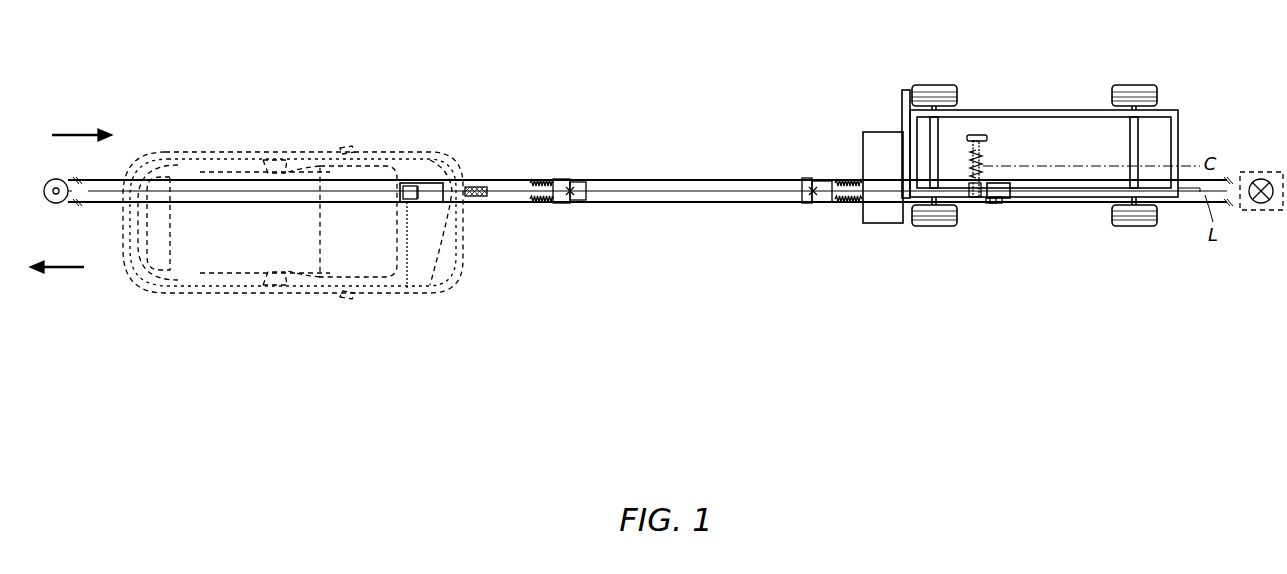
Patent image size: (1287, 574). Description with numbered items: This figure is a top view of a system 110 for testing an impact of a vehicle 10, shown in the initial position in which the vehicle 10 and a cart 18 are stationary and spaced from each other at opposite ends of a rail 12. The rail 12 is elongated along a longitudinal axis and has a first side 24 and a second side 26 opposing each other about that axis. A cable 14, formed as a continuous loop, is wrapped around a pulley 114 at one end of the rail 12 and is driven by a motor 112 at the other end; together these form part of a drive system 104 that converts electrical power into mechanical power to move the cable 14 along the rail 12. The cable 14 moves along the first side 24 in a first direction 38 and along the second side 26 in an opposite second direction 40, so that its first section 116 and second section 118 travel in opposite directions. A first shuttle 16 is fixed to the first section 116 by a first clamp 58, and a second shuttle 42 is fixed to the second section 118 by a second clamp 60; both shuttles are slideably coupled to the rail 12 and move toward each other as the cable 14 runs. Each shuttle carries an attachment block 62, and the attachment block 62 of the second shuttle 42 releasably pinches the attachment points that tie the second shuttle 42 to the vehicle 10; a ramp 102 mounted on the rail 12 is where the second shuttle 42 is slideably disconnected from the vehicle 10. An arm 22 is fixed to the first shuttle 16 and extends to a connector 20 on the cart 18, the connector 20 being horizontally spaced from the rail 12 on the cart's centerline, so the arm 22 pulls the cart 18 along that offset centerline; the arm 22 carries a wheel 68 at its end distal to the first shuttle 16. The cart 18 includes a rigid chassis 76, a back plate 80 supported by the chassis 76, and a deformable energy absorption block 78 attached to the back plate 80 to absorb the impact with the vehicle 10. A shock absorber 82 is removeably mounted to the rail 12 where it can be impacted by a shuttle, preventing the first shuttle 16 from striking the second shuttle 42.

The vehicle 10 is at (372, 296).
The rail 12 is at (702, 193).
The cable 14 is at (790, 177).
The first shuttle 16 is at (1012, 199).
The cart 18 is at (1063, 108).
The connector 20 is at (980, 163).
The arm 22 is at (983, 170).
The first side 24 is at (757, 195).
The second side 26 is at (758, 182).
The first direction 38 is at (71, 268).
The second direction 40 is at (70, 134).
The second shuttle 42 is at (430, 197).
The first clamp 58 is at (995, 204).
The second clamp 60 is at (413, 185).
The attachment block 62 is at (420, 197).
The wheel 68 is at (978, 133).
The chassis 76 is at (1083, 110).
The deformable energy absorption block 78 is at (873, 223).
The back plate 80 is at (900, 102).
The shock absorber 82 is at (560, 203).
The ramp 102 is at (477, 197).
The drive system 104 is at (1247, 210).
The system 110 is at (635, 253).
The motor 112 is at (1270, 174).
The pulley 114 is at (57, 203).
The first section 116 is at (642, 203).
The second section 118 is at (643, 182).